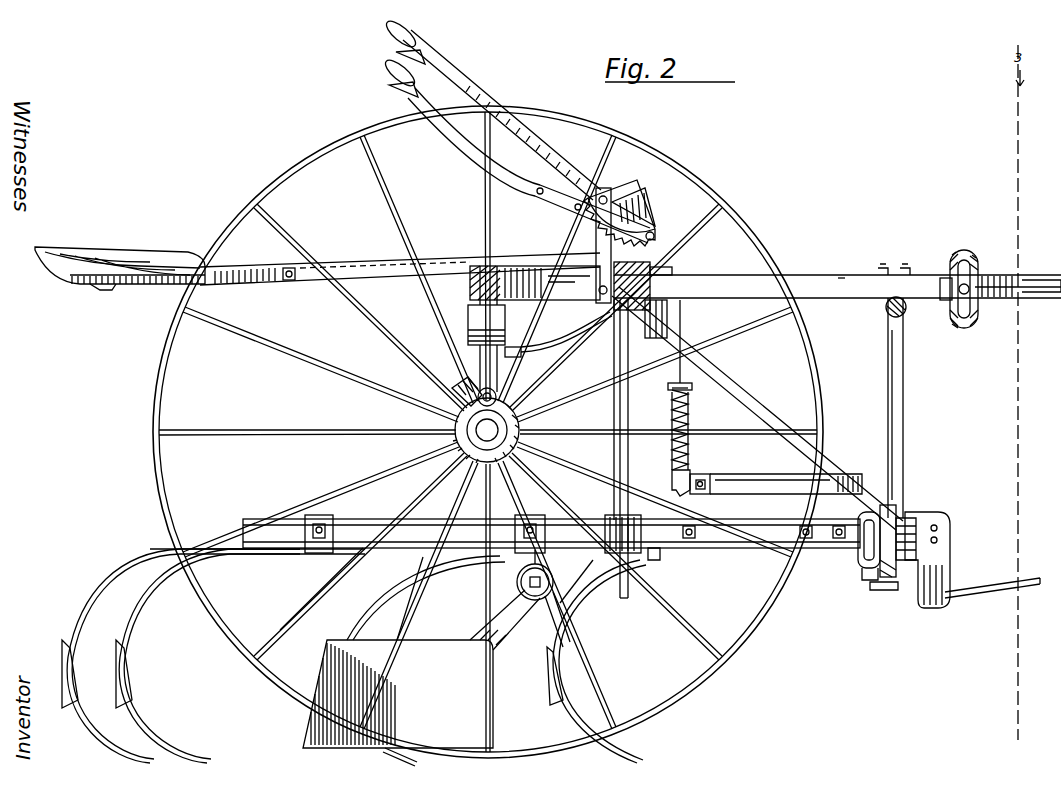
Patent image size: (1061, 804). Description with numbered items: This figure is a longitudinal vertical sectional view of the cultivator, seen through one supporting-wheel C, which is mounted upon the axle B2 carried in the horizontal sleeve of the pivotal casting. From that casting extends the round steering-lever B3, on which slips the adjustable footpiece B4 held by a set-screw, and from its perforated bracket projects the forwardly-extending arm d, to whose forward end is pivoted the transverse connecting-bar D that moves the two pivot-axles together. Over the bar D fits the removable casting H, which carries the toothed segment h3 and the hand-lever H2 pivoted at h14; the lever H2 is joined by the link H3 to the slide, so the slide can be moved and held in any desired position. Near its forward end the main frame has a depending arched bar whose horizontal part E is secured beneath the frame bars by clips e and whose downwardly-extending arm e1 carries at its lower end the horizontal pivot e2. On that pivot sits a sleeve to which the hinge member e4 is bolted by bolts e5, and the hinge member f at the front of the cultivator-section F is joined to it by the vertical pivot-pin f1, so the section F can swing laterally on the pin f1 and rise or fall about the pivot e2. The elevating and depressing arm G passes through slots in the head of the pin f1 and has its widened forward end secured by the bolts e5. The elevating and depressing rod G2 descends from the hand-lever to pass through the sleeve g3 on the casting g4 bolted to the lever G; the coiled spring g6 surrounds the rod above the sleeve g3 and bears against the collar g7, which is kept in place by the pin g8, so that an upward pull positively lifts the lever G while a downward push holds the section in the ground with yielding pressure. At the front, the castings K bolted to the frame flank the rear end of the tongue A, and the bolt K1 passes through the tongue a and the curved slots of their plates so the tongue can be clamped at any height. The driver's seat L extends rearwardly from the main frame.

The driver's seat L is at (120, 254).
The hand-lever H2 is at (470, 128).
The segment h3 is at (628, 183).
The pivot of hand-lever h14 is at (657, 250).
The removable casting H is at (660, 258).
The link H3 is at (600, 263).
The transverse connecting-bar D is at (690, 290).
The forwardly-extending arm d is at (568, 336).
The tongue a is at (841, 283).
The horizontal part of arched bar E is at (895, 297).
The clips e is at (910, 308).
The casting K is at (970, 252).
The tongue A is at (1035, 273).
The bolt K1 is at (1014, 297).
The downwardly-extending arm e1 is at (922, 438).
The horizontal pivot e2 is at (916, 533).
The bolts e5 is at (913, 520).
The hinge member e4 is at (874, 565).
The hinge member f is at (853, 543).
The vertical pivot-pin f1 is at (873, 560).
The cultivator-section F is at (735, 520).
The elevating and depressing arm G is at (771, 488).
The elevating and depressing rod G2 is at (672, 345).
The collar g7 is at (668, 390).
The pin g8 is at (692, 390).
The coiled spring g6 is at (690, 416).
The sleeve g3 is at (676, 470).
The casting g4 is at (700, 477).
The adjustable footpiece B4 is at (452, 388).
The steering-lever B3 is at (523, 387).
The axle B2 is at (467, 432).
The supporting-wheel C is at (463, 467).